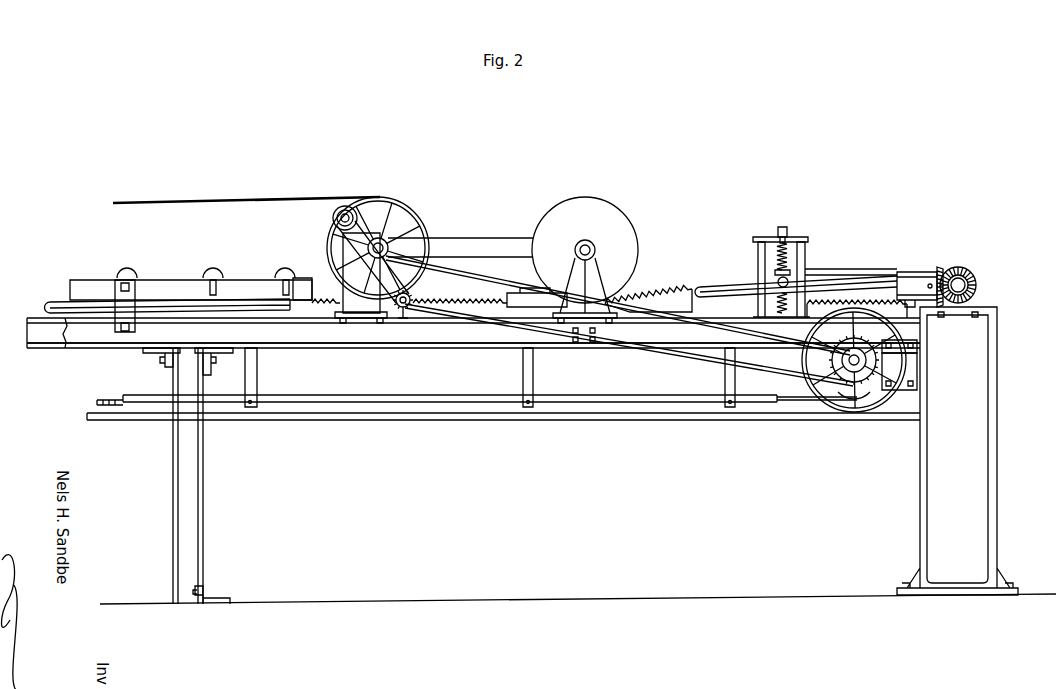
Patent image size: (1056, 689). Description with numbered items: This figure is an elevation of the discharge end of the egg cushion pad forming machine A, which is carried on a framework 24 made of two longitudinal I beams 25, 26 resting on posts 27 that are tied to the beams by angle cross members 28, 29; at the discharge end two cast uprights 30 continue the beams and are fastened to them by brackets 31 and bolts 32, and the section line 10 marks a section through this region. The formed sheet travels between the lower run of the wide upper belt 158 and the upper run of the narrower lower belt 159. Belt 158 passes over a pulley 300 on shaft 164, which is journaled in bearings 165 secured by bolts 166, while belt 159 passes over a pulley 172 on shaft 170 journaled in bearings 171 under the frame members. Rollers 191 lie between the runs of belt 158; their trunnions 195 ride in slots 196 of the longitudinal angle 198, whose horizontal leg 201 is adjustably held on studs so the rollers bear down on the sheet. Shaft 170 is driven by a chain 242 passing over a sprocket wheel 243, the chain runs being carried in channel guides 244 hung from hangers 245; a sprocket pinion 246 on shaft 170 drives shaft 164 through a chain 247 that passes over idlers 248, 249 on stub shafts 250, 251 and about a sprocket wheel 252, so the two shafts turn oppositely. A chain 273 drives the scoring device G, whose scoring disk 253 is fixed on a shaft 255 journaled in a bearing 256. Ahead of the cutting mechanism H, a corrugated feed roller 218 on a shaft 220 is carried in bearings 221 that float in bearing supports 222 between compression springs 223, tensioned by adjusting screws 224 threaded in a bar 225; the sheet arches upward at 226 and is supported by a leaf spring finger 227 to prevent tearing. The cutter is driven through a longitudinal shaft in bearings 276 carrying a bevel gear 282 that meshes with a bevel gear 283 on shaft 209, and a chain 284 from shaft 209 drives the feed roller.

The section line 10 is at (542, 118).
The framework 24 is at (203, 478).
The longitudinal I beam 25 is at (97, 335).
The longitudinal I beam 26 is at (45, 337).
The post 27 is at (192, 527).
The transverse frame member 28 is at (167, 352).
The transverse frame member 29 is at (212, 595).
The upright 30 is at (948, 477).
The bracket 31 is at (910, 365).
The bolt 32 is at (928, 365).
The belt 158 is at (190, 202).
The belt 159 is at (623, 415).
The shaft 164 is at (388, 242).
The bearing 165 is at (372, 238).
The bolt 166 is at (340, 315).
The shaft 170 is at (820, 375).
The bearing 171 is at (862, 372).
The pulley 172 is at (822, 402).
The roller 191 is at (203, 277).
The trunnion 195 is at (277, 277).
The slot 196 is at (213, 287).
The angle 198 is at (92, 287).
The horizontal leg 201 is at (302, 280).
The shaft 209 is at (963, 285).
The feed roller 218 is at (778, 262).
The shaft 220 is at (780, 278).
The bearing 221 is at (782, 267).
The bearing support 222 is at (803, 260).
The compression coil spring 223 is at (740, 328).
The adjusting screw 224 is at (783, 227).
The bar 225 is at (770, 237).
The arched portion of sheet 226 is at (655, 287).
The leaf spring finger 227 is at (658, 300).
The chain 242 is at (108, 403).
The sprocket wheel 243 is at (850, 393).
The channel guide 244 is at (365, 398).
The hanger 245 is at (250, 378).
The sprocket pinion 246 is at (850, 390).
The chain 247 is at (497, 325).
The sprocket idler 248 is at (405, 327).
The sprocket idler 249 is at (340, 205).
The stub shaft 250 is at (397, 308).
The stub shaft 251 is at (333, 218).
The sprocket wheel 252 is at (400, 263).
The scoring disk 253 is at (583, 205).
The shaft 255 is at (585, 247).
The bearing 256 is at (590, 243).
The chain 273 is at (488, 237).
The bearing 276 is at (905, 283).
The bevel gear 282 is at (940, 267).
The bevel gear 283 is at (972, 267).
The chain 284 is at (870, 267).
The pulley 300 is at (365, 205).
The machine A is at (457, 427).
The scoring device G is at (630, 212).
The cutting mechanism H is at (923, 258).